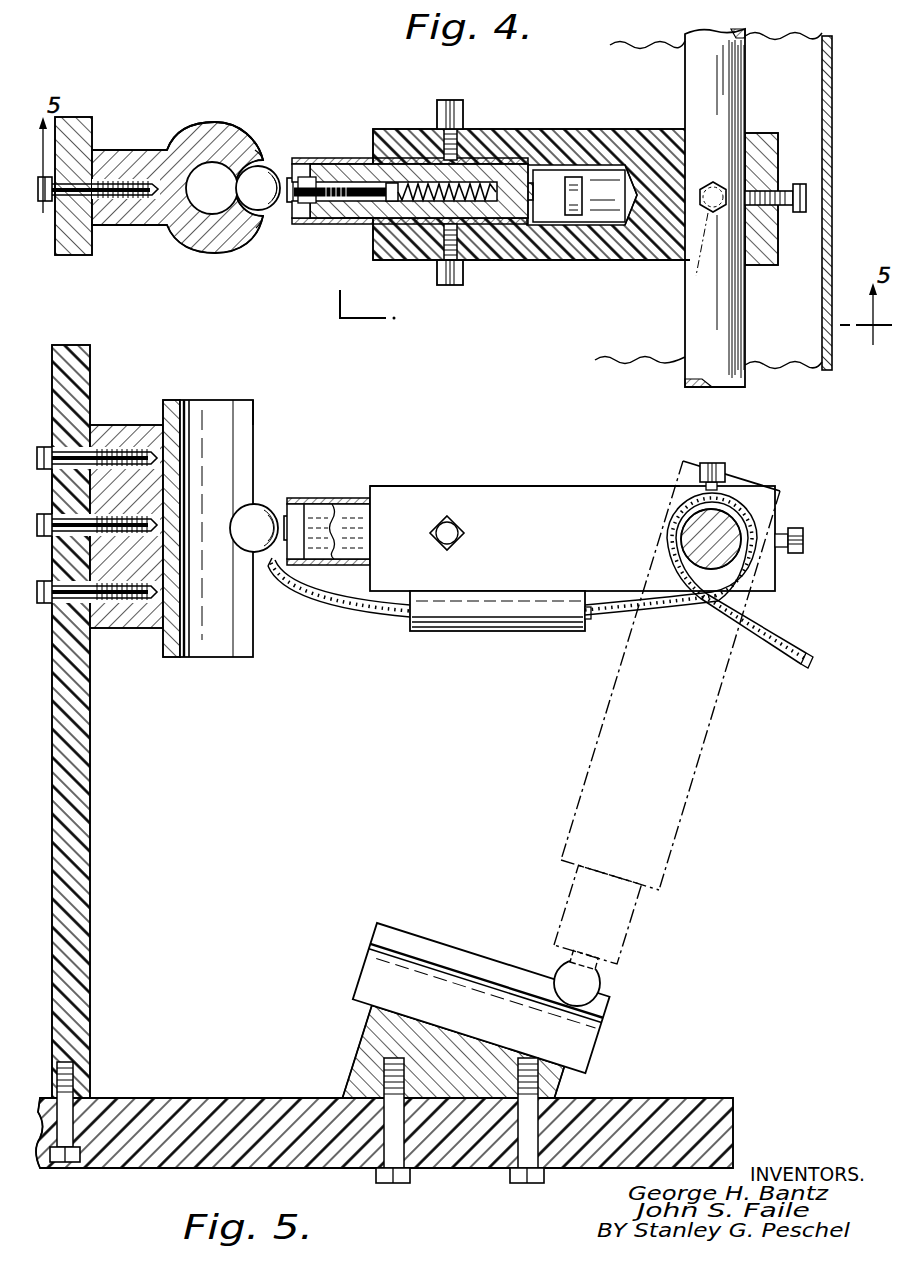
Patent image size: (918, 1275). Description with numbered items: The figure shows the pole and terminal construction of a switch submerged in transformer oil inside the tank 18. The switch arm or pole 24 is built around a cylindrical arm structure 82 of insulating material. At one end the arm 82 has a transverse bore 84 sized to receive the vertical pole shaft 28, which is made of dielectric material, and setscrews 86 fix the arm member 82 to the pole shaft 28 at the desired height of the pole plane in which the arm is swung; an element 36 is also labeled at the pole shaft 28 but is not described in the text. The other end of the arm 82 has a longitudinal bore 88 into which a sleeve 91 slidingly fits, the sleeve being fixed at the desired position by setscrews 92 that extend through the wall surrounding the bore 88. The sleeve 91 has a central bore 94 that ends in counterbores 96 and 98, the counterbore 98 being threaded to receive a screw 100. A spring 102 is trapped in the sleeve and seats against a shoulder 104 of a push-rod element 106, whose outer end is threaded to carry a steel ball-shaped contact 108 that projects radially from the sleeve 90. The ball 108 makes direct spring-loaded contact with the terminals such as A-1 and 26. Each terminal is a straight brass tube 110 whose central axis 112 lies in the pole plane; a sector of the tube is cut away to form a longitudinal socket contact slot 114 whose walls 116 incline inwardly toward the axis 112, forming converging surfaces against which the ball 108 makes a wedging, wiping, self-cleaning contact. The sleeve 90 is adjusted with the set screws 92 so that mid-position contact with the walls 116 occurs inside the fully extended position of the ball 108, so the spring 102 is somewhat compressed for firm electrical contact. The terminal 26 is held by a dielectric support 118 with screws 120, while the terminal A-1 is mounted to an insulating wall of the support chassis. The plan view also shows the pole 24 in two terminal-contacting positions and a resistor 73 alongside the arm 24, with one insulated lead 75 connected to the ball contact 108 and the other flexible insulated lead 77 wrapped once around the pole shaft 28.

In FIG. 4, the tank 18 is at (833, 191).
In FIG. 4, the pole 24 is at (584, 270).
In FIG. 5, the pole 24 is at (522, 473).
In FIG. 4, the terminal 26 is at (184, 258).
In FIG. 5, the terminal 26 is at (196, 670).
In FIG. 4, the pole shaft 28 is at (730, 333).
In FIG. 5, the pole shaft 28 is at (725, 528).
In FIG. 4, the set screw 36 is at (795, 214).
In FIG. 5, the resistor 73 is at (493, 633).
In FIG. 5, the insulated lead 75 is at (337, 616).
In FIG. 5, the insulated lead 77 is at (775, 652).
In FIG. 4, the cylindrical arm structure 82 is at (530, 140).
In FIG. 5, the cylindrical arm structure 82 is at (560, 494).
In FIG. 4, the transverse bore 84 is at (663, 133).
In FIG. 5, the transverse bore 84 is at (688, 532).
In FIG. 5, the setscrews 86 is at (717, 465).
In FIG. 4, the longitudinal bore 88 is at (604, 227).
In FIG. 5, the sleeve 90 is at (356, 505).
In FIG. 4, the sleeve 91 is at (362, 228).
In FIG. 4, the setscrews 92 is at (452, 102).
In FIG. 5, the setscrews 92 is at (452, 522).
In FIG. 4, the central bore 94 is at (410, 222).
In FIG. 4, the counterbore 96 is at (290, 216).
In FIG. 4, the counterbore 98 is at (510, 227).
In FIG. 4, the screw 100 is at (572, 178).
In FIG. 4, the spring 102 is at (415, 185).
In FIG. 4, the shoulder 104 is at (390, 182).
In FIG. 4, the push-rod element 106 is at (342, 230).
In FIG. 5, the push-rod element 106 is at (298, 498).
In FIG. 4, the ball-shaped contact 108 is at (272, 180).
In FIG. 5, the ball-shaped contact 108 is at (272, 512).
In FIG. 4, the cylindrical metallic tube 110 is at (210, 126).
In FIG. 5, the cylindrical metallic tube 110 is at (223, 652).
In FIG. 4, the central axis 112 is at (199, 196).
In FIG. 4, the socket contact slot 114 is at (285, 206).
In FIG. 4, the walls 116 is at (263, 158).
In FIG. 5, the walls 116 is at (254, 420).
In FIG. 5, the dielectric support 118 is at (80, 812).
In FIG. 4, the screws 120 is at (130, 198).
In FIG. 5, the screws 120 is at (118, 450).
In FIG. 5, the terminal A-1 is at (334, 985).